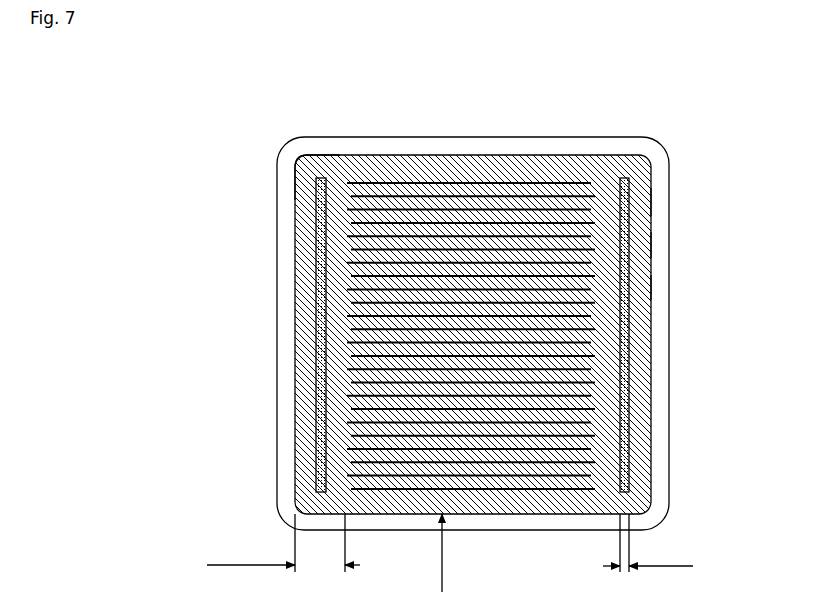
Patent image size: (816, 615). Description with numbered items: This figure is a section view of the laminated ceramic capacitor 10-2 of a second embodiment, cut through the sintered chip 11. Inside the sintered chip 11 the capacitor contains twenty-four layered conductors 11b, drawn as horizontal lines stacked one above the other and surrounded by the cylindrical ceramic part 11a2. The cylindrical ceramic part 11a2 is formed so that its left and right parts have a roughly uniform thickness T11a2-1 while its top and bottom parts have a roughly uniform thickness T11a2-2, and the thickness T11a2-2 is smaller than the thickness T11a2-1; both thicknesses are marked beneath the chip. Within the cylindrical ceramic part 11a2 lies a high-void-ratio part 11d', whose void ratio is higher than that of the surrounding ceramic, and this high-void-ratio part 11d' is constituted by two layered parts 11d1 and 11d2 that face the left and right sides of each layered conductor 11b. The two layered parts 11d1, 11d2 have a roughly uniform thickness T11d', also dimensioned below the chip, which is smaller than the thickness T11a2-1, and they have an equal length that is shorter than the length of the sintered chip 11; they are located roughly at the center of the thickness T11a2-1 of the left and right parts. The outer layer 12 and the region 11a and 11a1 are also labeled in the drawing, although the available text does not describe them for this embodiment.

The laminated ceramic capacitor 10-2 is at (475, 308).
The sintered chip 11 is at (408, 156).
The external layer / case 12 is at (302, 136).
The first cover layer 11a is at (300, 165).
The layered conductor 11b is at (296, 217).
The layered part 11d1 is at (305, 328).
The layered part 11d2 is at (650, 335).
The first margin portion 11a1 is at (650, 203).
The cylindrical ceramic part 11a2 is at (650, 245).
The high-void-ratio part 11d' is at (700, 286).
The thickness of left and right parts of cylindrical ceramic part T11a2-1 is at (283, 553).
The thickness of top and bottom parts of cylindrical ceramic part T11a2-2 is at (479, 553).
The thickness of layered parts T11d' is at (648, 553).